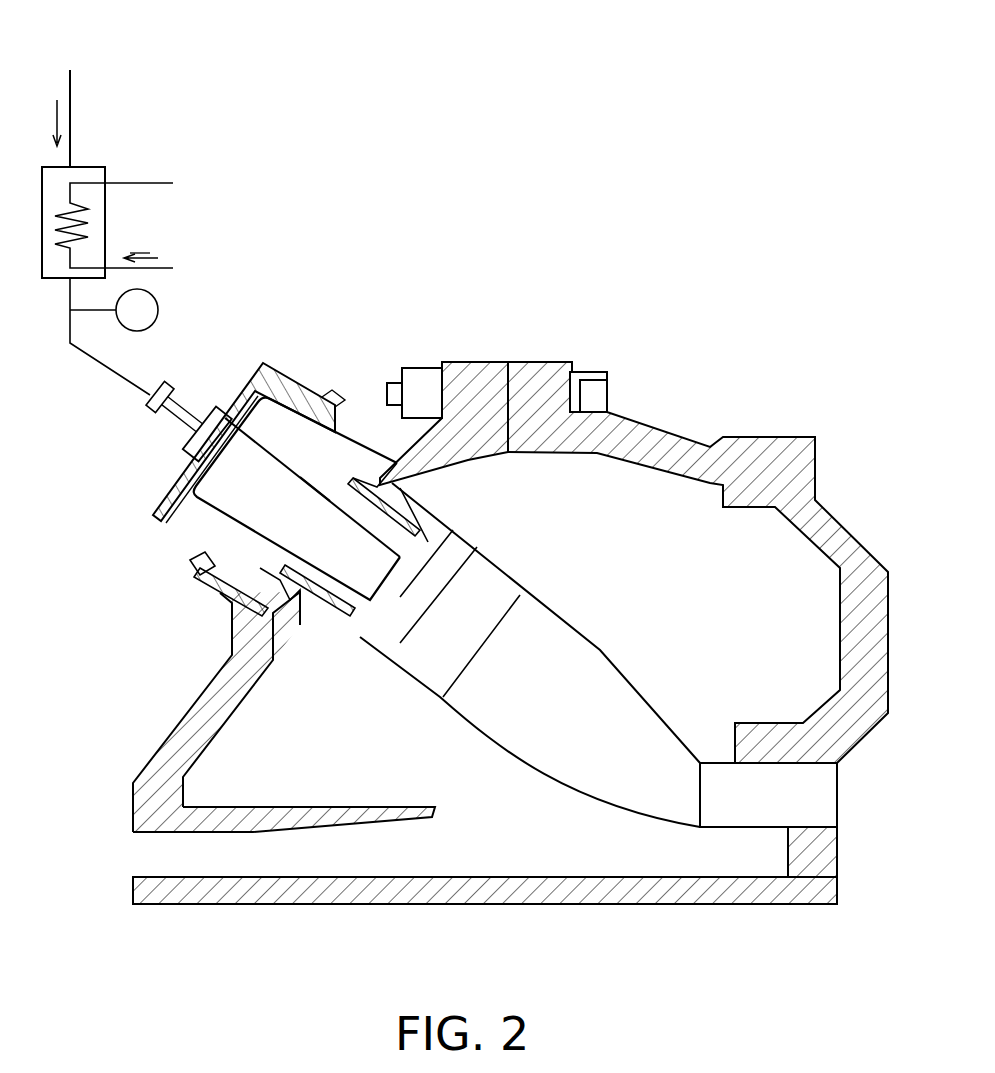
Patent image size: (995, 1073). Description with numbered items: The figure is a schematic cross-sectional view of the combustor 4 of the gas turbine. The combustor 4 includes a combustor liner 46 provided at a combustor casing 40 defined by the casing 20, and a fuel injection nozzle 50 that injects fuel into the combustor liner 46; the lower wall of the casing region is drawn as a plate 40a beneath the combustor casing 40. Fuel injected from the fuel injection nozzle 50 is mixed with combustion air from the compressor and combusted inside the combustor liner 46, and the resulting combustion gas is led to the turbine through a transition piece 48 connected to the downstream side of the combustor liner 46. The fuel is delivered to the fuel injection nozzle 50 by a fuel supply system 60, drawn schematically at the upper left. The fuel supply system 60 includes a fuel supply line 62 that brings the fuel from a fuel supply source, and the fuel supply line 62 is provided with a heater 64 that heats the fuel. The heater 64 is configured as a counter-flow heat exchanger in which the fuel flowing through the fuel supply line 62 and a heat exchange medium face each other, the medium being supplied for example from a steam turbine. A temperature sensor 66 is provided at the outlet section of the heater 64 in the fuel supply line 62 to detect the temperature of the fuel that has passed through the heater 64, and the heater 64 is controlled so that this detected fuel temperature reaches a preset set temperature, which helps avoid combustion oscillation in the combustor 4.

The combustor 4 is at (636, 362).
The casing 20 is at (150, 515).
The combustor casing 40 is at (385, 761).
The bottom plate 40a is at (248, 855).
The combustor liner 46 is at (495, 580).
The transition piece 48 is at (565, 633).
The fuel injection nozzle 50 is at (316, 530).
The fuel supply system 60 is at (188, 116).
The fuel supply line 62 is at (70, 90).
The heater 64 is at (95, 167).
The temperature sensor 66 is at (158, 316).